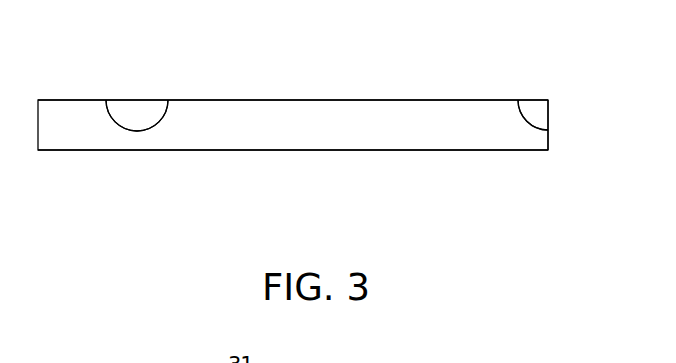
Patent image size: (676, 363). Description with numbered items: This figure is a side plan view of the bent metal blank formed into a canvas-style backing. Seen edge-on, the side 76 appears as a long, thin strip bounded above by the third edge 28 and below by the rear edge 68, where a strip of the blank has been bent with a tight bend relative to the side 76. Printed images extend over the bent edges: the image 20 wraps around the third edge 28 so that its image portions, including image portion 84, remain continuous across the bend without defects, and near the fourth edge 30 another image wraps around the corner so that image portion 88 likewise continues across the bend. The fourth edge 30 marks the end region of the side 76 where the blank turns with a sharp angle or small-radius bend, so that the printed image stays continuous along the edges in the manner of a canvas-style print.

The image portion 20 is at (129, 88).
The third edge 28 is at (273, 100).
The fourth edge 30 is at (549, 100).
The rear edge 68 is at (273, 150).
The side 76 is at (427, 133).
The image portion 84 is at (137, 120).
The image portion 88 is at (532, 112).